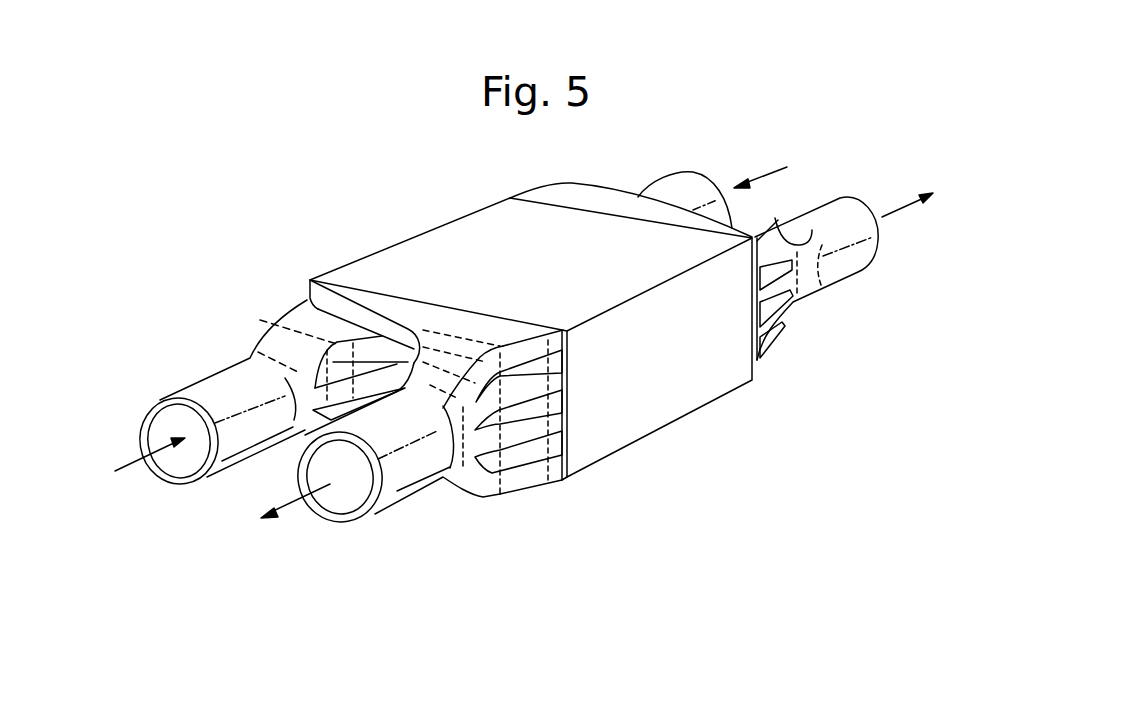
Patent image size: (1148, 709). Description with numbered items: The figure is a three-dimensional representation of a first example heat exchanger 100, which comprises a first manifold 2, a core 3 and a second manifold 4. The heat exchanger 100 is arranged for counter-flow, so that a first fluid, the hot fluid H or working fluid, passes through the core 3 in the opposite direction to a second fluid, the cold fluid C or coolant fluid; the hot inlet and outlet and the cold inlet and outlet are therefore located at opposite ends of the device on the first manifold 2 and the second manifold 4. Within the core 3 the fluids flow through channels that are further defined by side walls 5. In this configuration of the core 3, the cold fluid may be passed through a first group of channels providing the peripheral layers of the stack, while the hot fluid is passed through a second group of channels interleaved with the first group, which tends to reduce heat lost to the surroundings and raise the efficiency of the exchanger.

The heat exchanger 100 is at (418, 216).
The first manifold 2 is at (830, 347).
The core 3 is at (659, 459).
The second manifold 4 is at (417, 533).
The side walls 5 is at (673, 383).